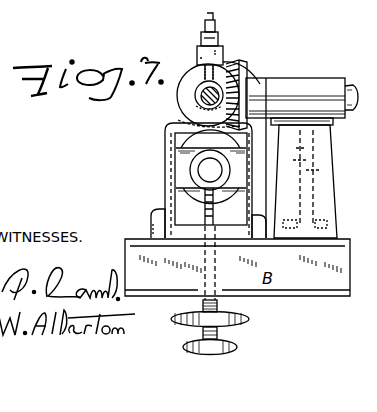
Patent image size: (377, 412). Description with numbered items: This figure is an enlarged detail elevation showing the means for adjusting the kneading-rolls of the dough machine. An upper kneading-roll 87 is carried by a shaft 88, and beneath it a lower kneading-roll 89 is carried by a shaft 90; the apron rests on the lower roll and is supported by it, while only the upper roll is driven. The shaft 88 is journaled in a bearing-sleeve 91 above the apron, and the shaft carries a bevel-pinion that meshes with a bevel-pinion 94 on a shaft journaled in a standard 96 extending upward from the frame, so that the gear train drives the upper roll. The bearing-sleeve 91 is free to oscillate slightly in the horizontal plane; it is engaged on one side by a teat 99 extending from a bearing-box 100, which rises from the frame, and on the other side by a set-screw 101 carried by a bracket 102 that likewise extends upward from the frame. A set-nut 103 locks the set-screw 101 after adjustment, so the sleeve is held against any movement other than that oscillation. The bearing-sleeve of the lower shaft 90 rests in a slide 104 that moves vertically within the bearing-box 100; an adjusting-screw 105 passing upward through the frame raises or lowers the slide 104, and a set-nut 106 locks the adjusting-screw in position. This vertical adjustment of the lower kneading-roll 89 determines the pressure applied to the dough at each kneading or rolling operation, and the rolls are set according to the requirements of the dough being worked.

The upper kneading-rolls 87 is at (190, 99).
The upper kneading-roll shafts 88 is at (196, 108).
The lower kneading-rolls 89 is at (196, 206).
The lower kneading-roll shafts 90 is at (210, 170).
The bearing-sleeves 91 is at (193, 88).
The bevel-pinions 94 is at (250, 80).
The standards 96 is at (352, 203).
The teats 99 is at (176, 125).
The bearing-boxes 100 is at (172, 150).
The set-screws 101 is at (215, 20).
The brackets 102 is at (234, 62).
The set-nuts 103 is at (217, 38).
The slides 104 is at (172, 188).
The adjusting-screws 105 is at (178, 338).
The set-nuts 106 is at (249, 325).